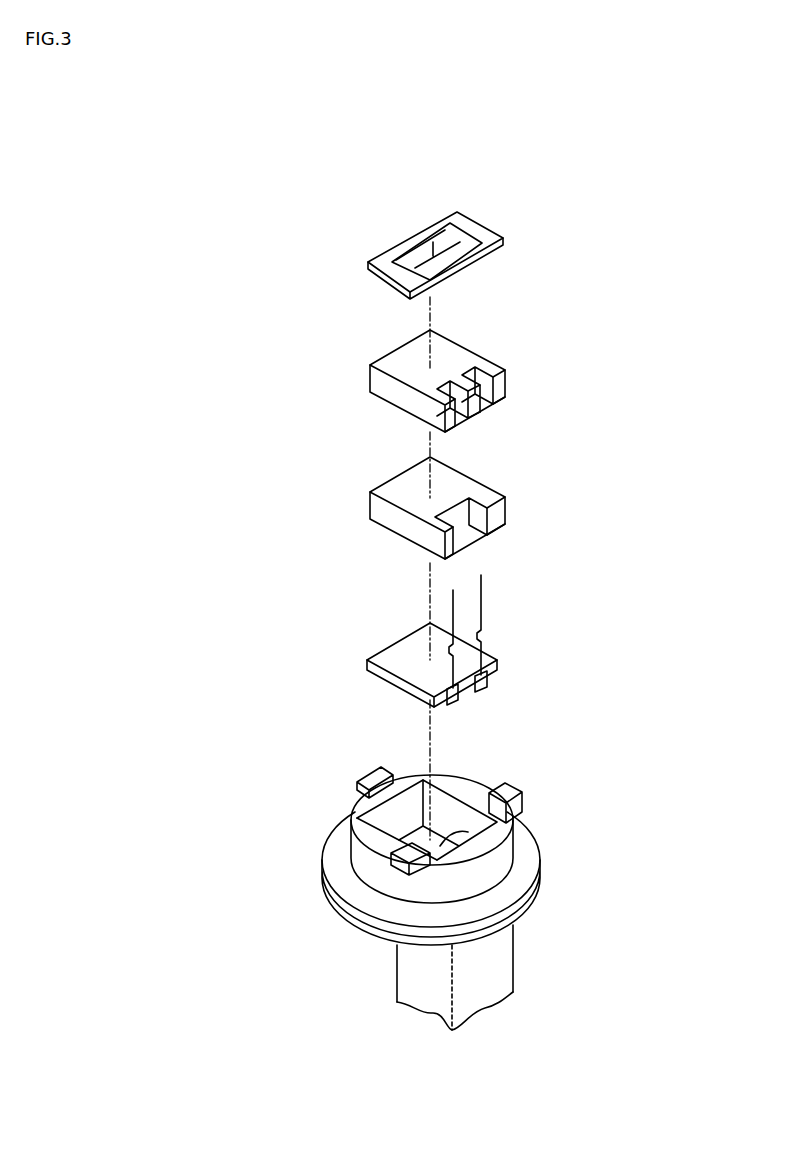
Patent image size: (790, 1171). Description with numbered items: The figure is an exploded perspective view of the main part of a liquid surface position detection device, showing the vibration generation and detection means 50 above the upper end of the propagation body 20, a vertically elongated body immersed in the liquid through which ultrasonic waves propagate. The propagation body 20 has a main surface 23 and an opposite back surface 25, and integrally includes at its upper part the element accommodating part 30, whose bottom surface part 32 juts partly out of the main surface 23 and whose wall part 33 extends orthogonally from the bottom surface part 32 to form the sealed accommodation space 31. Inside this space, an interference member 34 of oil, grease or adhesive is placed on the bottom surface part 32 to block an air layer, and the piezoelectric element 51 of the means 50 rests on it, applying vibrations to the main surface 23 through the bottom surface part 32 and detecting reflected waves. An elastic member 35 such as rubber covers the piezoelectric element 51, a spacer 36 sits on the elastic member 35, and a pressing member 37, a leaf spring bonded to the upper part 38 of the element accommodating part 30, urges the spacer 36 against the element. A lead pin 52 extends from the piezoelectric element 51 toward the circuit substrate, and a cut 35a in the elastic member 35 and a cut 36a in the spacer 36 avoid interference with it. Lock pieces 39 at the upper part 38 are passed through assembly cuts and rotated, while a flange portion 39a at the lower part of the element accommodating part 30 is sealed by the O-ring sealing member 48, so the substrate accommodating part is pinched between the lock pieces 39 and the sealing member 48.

The propagation body 20 is at (482, 985).
The main surface 23 is at (396, 977).
The back surface 25 is at (482, 985).
The element accommodating part 30 is at (457, 834).
The accommodation space 31 is at (443, 812).
The bottom surface part 32 is at (355, 820).
The wall part 33 is at (408, 800).
The interference member 34 is at (445, 842).
The elastic member 35 is at (465, 511).
The cut 35a is at (480, 515).
The spacer 36 is at (465, 376).
The cut 36a is at (486, 394).
The pressing member 37 is at (478, 220).
The upper part 38 is at (478, 785).
The lock pieces 39 is at (515, 790).
The flange portion 39a is at (530, 915).
The sealing member 48 is at (537, 852).
The vibration generation and detection means 50 is at (292, 247).
The piezoelectric element 51 is at (402, 642).
The lead pin 52 is at (482, 598).